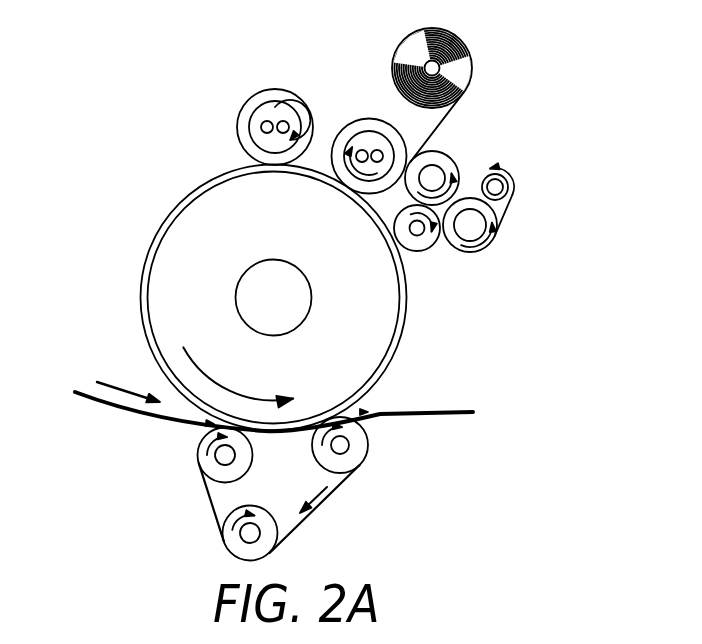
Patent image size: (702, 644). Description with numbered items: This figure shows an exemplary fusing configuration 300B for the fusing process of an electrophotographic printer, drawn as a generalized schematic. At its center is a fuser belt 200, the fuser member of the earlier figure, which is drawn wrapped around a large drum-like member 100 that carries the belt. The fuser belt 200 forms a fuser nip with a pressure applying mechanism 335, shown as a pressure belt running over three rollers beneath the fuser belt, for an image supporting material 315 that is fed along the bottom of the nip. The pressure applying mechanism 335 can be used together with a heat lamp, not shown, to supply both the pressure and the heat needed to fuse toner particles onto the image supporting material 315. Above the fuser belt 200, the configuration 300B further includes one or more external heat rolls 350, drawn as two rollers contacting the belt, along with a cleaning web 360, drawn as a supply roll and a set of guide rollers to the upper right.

The fusing configuration 300B is at (183, 78).
The drum 100 is at (288, 232).
The fuser belt 200 is at (190, 192).
The image supporting material 315 is at (175, 412).
The pressure applying mechanism 335 is at (197, 507).
The external heat rolls 350 is at (382, 128).
The cleaning web 360 is at (478, 138).